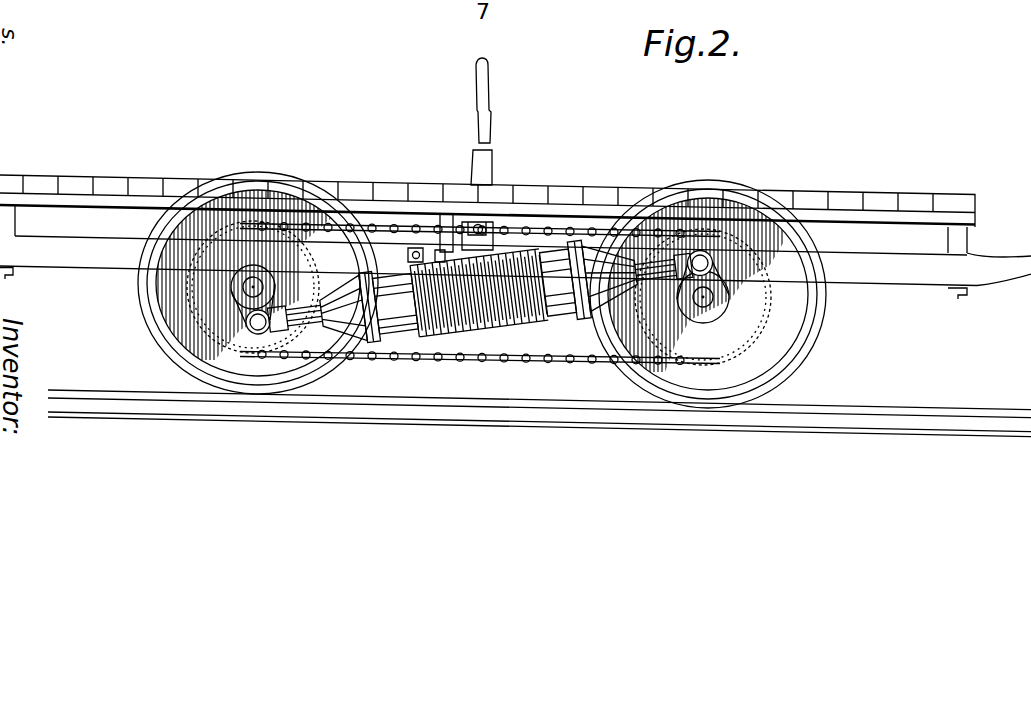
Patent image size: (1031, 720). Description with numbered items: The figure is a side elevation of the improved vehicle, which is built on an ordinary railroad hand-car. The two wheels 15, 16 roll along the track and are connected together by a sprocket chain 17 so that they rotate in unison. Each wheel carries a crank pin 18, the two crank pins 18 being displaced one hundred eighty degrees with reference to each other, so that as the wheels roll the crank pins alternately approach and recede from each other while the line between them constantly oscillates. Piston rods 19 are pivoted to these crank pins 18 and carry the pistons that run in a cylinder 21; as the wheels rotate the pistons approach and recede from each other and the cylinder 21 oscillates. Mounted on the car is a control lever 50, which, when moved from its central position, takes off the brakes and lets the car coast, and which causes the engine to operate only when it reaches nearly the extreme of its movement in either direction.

The wheel 15 is at (245, 173).
The wheel 16 is at (707, 185).
The sprocket chain 17 is at (564, 208).
The crank pin 18 is at (270, 305).
The piston rod 19 is at (276, 313).
The cylinder 21 is at (446, 356).
The control lever 50 is at (486, 160).